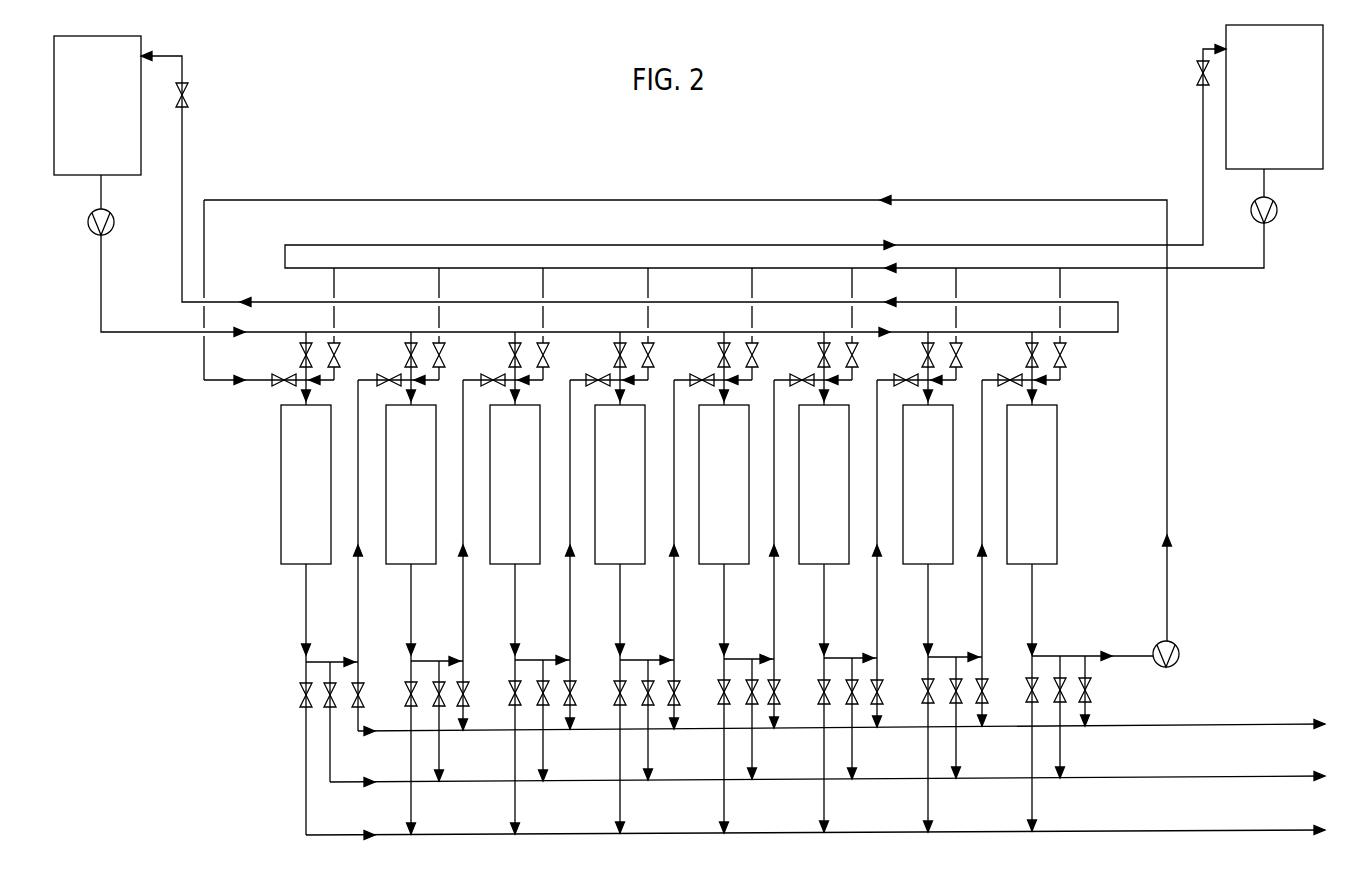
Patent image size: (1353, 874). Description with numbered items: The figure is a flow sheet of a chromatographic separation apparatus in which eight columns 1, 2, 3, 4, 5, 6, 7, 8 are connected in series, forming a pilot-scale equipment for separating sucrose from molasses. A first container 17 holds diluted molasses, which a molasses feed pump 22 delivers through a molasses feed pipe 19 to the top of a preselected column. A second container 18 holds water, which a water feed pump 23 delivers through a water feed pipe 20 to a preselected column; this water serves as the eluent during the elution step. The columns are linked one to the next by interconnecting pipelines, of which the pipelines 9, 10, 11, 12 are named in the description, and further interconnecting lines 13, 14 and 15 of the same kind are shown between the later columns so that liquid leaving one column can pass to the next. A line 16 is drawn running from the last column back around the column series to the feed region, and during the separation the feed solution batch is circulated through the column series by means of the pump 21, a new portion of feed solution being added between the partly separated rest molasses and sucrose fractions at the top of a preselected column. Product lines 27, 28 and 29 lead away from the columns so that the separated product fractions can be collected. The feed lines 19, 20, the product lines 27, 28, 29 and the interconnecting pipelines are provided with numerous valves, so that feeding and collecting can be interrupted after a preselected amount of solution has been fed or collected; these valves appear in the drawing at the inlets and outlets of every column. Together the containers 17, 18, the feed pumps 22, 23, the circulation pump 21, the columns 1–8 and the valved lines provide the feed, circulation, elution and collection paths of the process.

The column 1 is at (306, 484).
The column 2 is at (411, 484).
The column 3 is at (515, 484).
The column 4 is at (620, 484).
The column 5 is at (724, 484).
The column 6 is at (824, 484).
The column 7 is at (928, 484).
The column 8 is at (1032, 484).
The pipeline interconnecting the columns 9 is at (358, 600).
The pipeline interconnecting the columns 10 is at (463, 600).
The pipeline interconnecting the columns 11 is at (570, 600).
The pipeline interconnecting the columns 12 is at (674, 600).
The connecting line 13 is at (774, 600).
The connecting line 14 is at (877, 600).
The connecting line 15 is at (982, 600).
The recirculation line 16 is at (587, 200).
The first container 17 is at (141, 135).
The second container 18 is at (1300, 170).
The molasses feed pipe 19 is at (101, 276).
The water feed pipe 20 is at (1268, 246).
The pump 21 is at (1179, 656).
The molasses feed pump 22 is at (114, 222).
The water feed pump 23 is at (1277, 212).
The product line 27 is at (1220, 724).
The product line 28 is at (1214, 776).
The product line 29 is at (1213, 830).